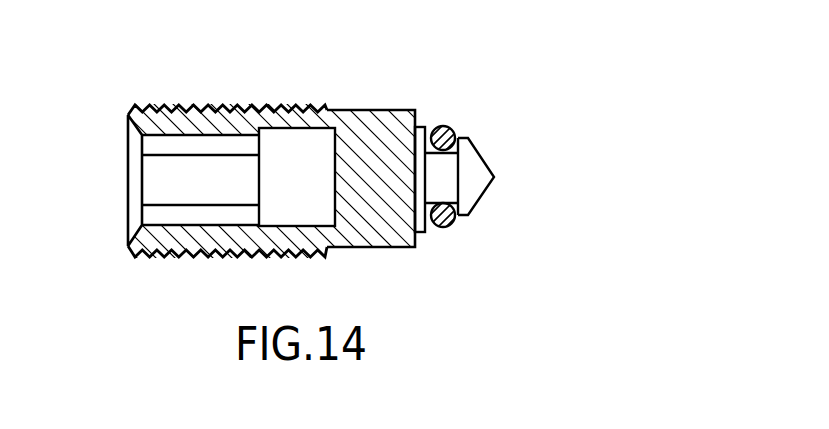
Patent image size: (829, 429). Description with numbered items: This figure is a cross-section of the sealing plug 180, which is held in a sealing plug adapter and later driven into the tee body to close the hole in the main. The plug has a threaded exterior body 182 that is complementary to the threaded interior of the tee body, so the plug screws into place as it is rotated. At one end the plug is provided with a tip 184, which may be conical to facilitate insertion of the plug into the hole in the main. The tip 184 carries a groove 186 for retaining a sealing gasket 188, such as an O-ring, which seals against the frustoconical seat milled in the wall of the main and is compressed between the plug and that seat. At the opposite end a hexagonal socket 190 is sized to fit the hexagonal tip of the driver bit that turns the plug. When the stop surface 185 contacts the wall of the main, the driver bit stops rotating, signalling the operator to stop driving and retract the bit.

The sealing plug 180 is at (343, 109).
The threaded exterior body 182 is at (188, 106).
The tip 184 is at (478, 190).
The stop surface 185 is at (410, 117).
The groove 186 is at (425, 192).
The sealing gasket 188 is at (446, 228).
The hexagonal socket 190 is at (153, 191).